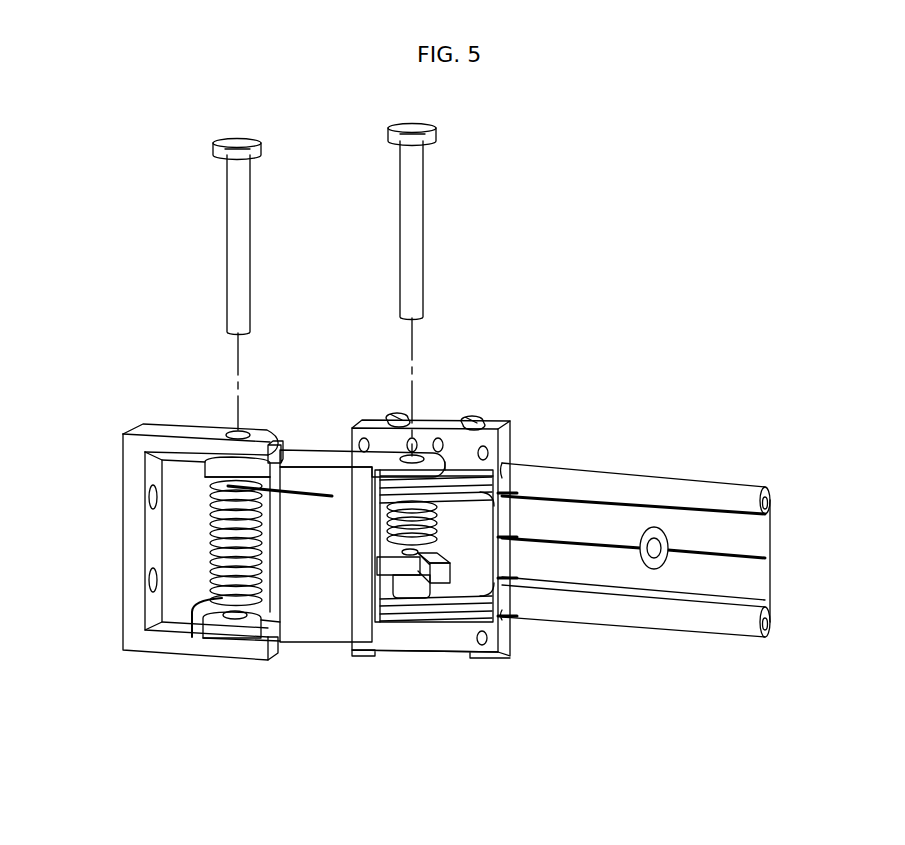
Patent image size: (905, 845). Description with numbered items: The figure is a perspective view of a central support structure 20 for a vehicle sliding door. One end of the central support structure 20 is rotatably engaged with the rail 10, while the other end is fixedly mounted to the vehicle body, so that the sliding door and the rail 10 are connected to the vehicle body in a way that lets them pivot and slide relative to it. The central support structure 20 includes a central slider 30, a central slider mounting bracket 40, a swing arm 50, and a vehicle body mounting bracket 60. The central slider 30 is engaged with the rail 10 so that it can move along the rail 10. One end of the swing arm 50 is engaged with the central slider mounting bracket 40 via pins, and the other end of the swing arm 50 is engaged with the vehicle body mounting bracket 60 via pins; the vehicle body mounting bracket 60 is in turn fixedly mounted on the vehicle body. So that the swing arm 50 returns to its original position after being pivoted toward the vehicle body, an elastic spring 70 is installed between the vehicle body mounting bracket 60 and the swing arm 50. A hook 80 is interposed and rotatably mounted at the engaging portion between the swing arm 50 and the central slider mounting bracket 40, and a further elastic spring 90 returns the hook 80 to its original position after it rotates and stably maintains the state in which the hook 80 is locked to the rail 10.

The rail 10 is at (643, 482).
The central support structure 20 is at (367, 692).
The central slider 30 is at (492, 428).
The central slider mounting bracket 40 is at (465, 644).
The swing arm 50 is at (319, 642).
The vehicle body mounting bracket 60 is at (171, 652).
The elastic spring 70 is at (257, 642).
The hook 80 is at (440, 580).
The elastic spring 90 is at (411, 556).